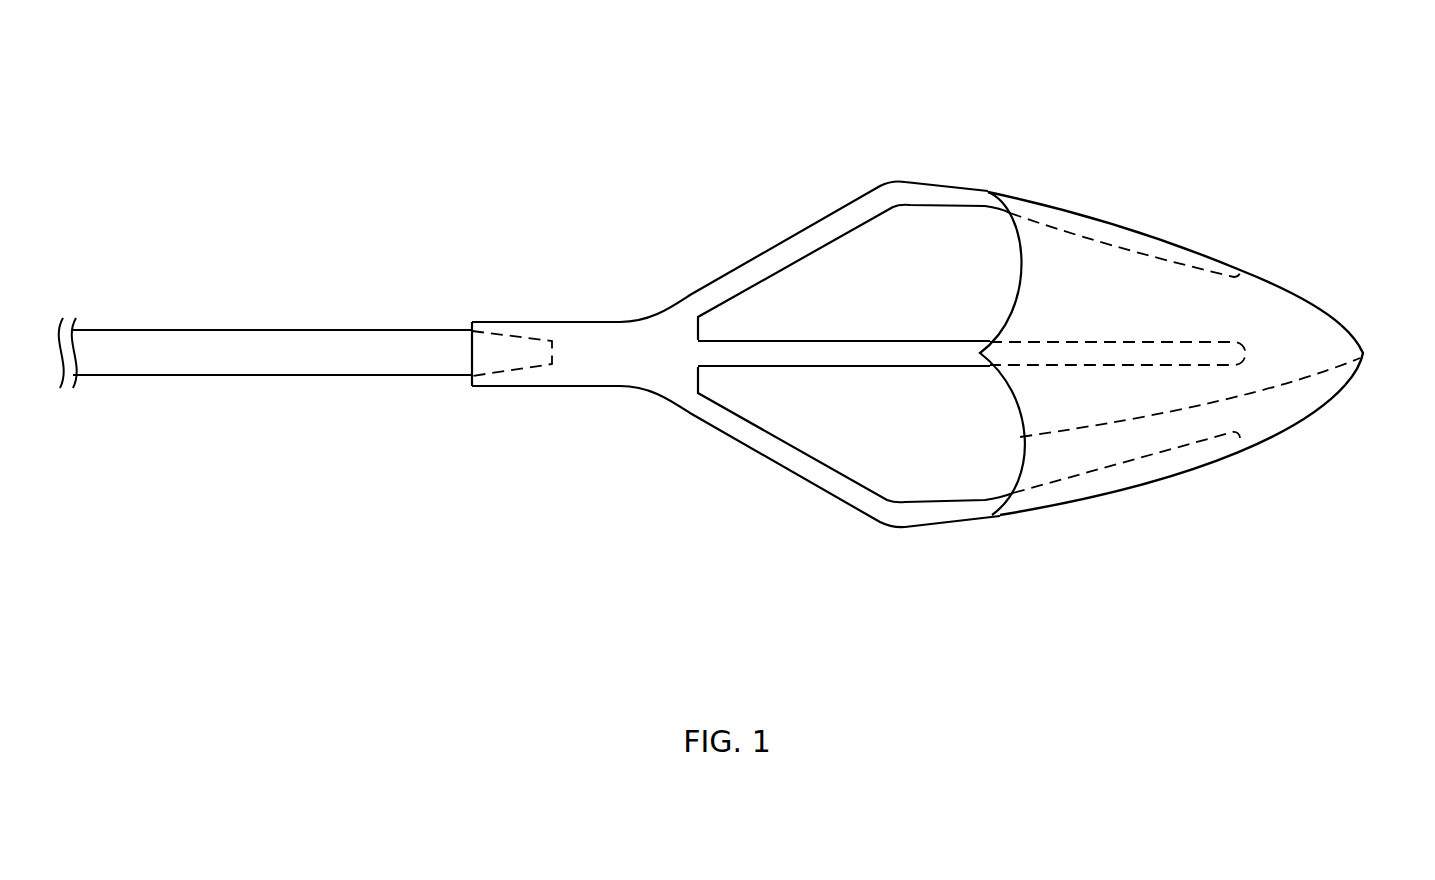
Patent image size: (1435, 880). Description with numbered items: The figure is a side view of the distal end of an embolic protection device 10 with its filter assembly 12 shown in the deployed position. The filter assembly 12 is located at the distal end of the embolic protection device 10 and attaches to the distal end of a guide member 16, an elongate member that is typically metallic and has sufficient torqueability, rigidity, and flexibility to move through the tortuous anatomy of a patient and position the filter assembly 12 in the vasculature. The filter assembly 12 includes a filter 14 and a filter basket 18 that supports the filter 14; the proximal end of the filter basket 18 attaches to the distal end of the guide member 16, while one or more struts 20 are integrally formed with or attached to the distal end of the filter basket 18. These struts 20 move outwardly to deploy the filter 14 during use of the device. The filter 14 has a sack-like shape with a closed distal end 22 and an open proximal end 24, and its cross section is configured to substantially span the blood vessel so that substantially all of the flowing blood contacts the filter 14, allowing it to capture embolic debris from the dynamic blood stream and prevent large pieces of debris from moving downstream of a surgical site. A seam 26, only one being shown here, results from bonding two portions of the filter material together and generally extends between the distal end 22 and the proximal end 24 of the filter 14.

The embolic protection device 10 is at (650, 182).
The filter assembly 12 is at (1097, 128).
The filter 14 is at (1309, 299).
The guide member 16 is at (323, 358).
The filter basket 18 is at (927, 536).
The struts 20 is at (918, 190).
The distal end 22 is at (1368, 337).
The proximal end 24 is at (1012, 414).
The seam 26 is at (1243, 397).